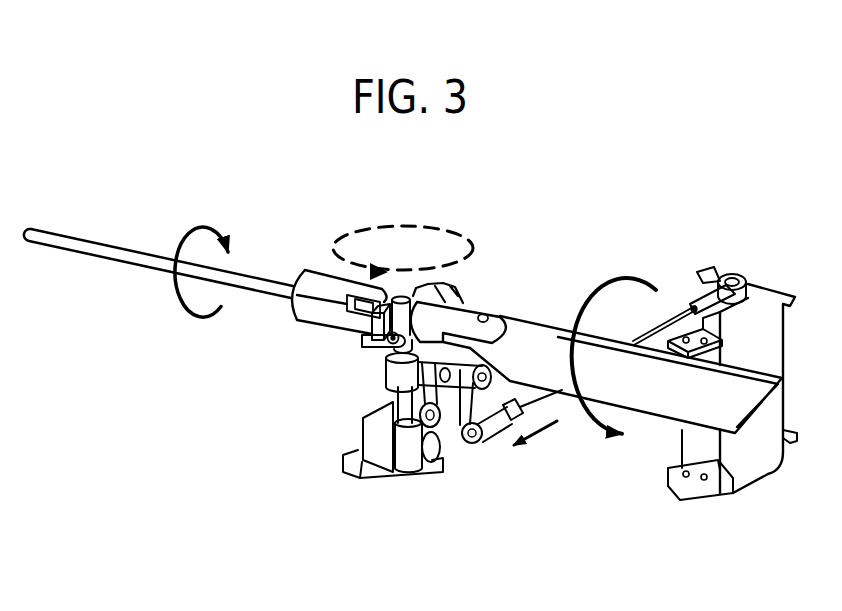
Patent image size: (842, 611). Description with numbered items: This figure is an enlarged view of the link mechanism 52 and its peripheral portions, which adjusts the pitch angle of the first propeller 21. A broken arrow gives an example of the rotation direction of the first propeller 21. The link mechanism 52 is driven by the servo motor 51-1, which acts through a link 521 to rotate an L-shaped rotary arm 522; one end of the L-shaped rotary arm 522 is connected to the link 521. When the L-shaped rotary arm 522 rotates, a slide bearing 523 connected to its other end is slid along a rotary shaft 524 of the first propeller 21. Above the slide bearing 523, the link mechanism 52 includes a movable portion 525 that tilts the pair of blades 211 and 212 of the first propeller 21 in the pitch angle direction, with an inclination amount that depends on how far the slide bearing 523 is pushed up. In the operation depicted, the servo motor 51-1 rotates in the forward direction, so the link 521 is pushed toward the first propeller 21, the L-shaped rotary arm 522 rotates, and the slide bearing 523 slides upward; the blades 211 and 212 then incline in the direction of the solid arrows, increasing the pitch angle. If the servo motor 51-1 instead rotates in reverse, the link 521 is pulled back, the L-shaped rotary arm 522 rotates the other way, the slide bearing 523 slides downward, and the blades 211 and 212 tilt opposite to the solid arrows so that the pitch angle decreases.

The first propeller 21 is at (655, 405).
The blade 211 is at (673, 397).
The blade 212 is at (120, 255).
The servo motor 51-1 is at (772, 308).
The link mechanism 52 is at (668, 315).
The link 521 is at (547, 398).
The L-shaped rotary arm 522 is at (453, 436).
The slide bearing 523 is at (393, 372).
The rotary shaft 524 is at (363, 433).
The movable portion 525 is at (363, 338).